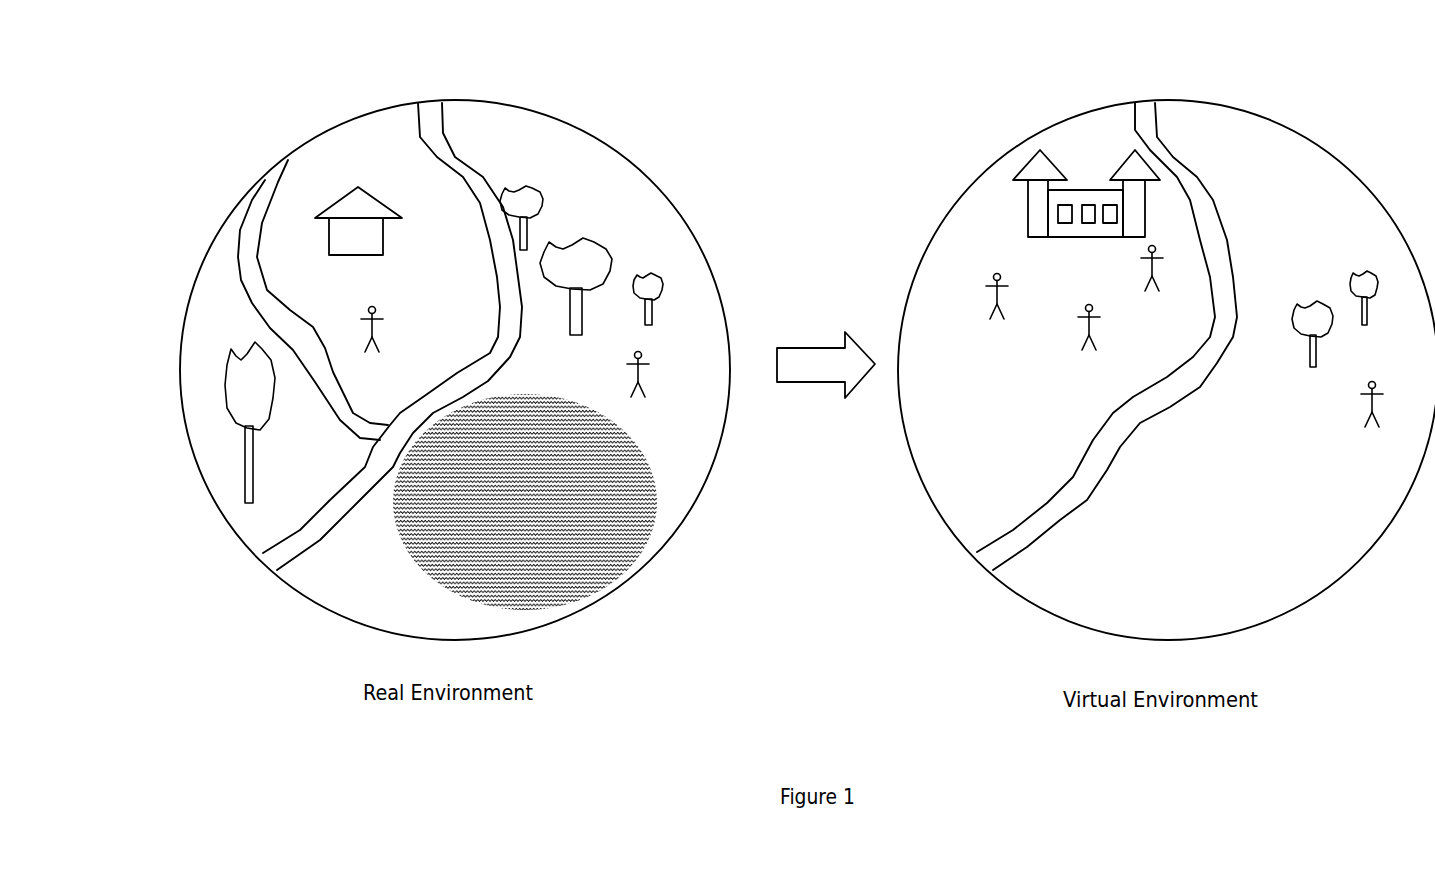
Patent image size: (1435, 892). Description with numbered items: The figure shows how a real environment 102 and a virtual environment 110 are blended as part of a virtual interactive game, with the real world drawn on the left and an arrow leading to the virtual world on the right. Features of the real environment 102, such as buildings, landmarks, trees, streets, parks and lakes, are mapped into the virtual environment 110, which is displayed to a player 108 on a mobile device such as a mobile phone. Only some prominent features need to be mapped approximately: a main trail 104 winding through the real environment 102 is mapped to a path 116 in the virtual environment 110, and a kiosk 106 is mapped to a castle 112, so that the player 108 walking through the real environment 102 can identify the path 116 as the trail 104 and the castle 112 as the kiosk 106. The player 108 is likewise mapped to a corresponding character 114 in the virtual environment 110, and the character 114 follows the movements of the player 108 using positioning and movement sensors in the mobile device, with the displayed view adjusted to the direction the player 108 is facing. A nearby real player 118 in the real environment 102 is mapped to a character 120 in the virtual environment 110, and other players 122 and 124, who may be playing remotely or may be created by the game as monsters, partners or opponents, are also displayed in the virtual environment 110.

The real environment 102 is at (459, 370).
The main trail 104 is at (380, 338).
The kiosk 106 is at (384, 221).
The player 108 is at (407, 330).
The real player 118 is at (674, 375).
The virtual environment 110 is at (1145, 370).
The castle 112 is at (1061, 196).
The character 114 is at (1056, 339).
The path 116 is at (1107, 336).
The character 120 is at (1332, 405).
The other player 122 is at (960, 312).
The other player 124 is at (1172, 288).